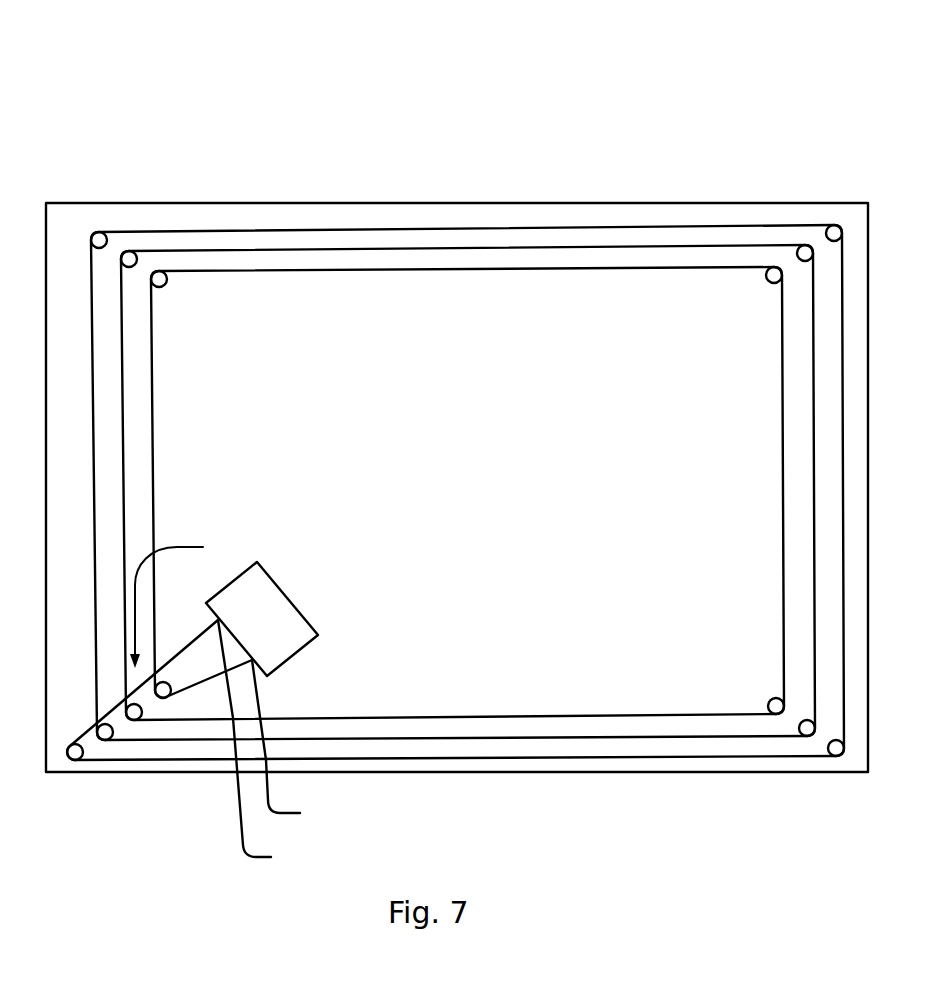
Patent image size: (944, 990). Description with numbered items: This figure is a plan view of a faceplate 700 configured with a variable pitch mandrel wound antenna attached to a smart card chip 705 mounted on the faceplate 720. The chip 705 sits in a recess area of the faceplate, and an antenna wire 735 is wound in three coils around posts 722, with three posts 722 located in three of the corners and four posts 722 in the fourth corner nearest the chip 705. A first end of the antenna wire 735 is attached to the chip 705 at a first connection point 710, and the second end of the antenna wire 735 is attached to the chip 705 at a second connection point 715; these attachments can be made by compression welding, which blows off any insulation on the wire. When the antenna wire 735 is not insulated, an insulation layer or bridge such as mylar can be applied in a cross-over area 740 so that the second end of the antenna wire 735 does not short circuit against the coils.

The faceplate 700 is at (745, 108).
The smart card chip 705 is at (265, 610).
The first connection point 710 is at (299, 743).
The second connection point 715 is at (269, 743).
The faceplate 720 is at (362, 203).
The posts 722 is at (108, 233).
The antenna wire 735 is at (540, 227).
The cross-over area 740 is at (189, 601).